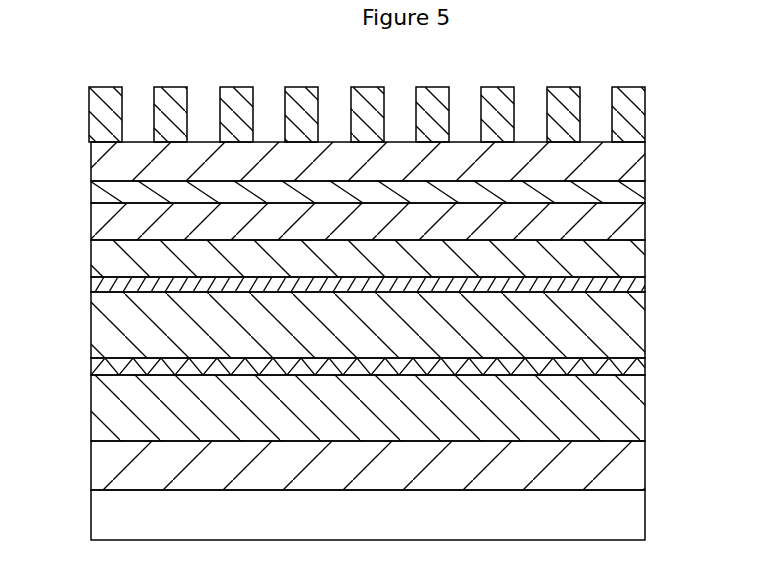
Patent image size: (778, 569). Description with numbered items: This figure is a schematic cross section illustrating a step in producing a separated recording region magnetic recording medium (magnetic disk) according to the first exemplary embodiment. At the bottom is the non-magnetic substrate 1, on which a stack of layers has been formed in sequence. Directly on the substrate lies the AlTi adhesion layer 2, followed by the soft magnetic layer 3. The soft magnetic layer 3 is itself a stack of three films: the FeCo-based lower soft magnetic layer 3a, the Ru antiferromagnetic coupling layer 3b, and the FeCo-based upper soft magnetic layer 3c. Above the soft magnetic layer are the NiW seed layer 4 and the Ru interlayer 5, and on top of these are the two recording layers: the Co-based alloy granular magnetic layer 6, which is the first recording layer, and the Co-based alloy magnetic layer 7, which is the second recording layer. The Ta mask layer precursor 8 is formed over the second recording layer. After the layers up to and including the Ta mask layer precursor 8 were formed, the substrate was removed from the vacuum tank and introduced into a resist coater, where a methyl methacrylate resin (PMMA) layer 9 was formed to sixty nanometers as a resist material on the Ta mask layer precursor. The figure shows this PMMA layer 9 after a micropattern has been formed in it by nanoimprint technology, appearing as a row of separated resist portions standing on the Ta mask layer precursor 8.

The non-magnetic substrate 1 is at (637, 515).
The AlTi adhesion layer 2 is at (637, 468).
The soft magnetic layer 3 is at (386, 367).
The FeCo-based lower soft magnetic layer 3a is at (637, 412).
The Ru antiferromagnetic coupling layer 3b is at (637, 368).
The FeCo-based upper soft magnetic layer 3c is at (637, 327).
The NiW seed layer 4 is at (637, 285).
The Ru interlayer 5 is at (637, 258).
The Co-based alloy granular magnetic layer 6 is at (637, 222).
The Co-based alloy magnetic layer 7 is at (100, 191).
The Ta mask layer precursor 8 is at (637, 162).
The methyl methacrylate resin (PMMA) layer 9 is at (637, 115).